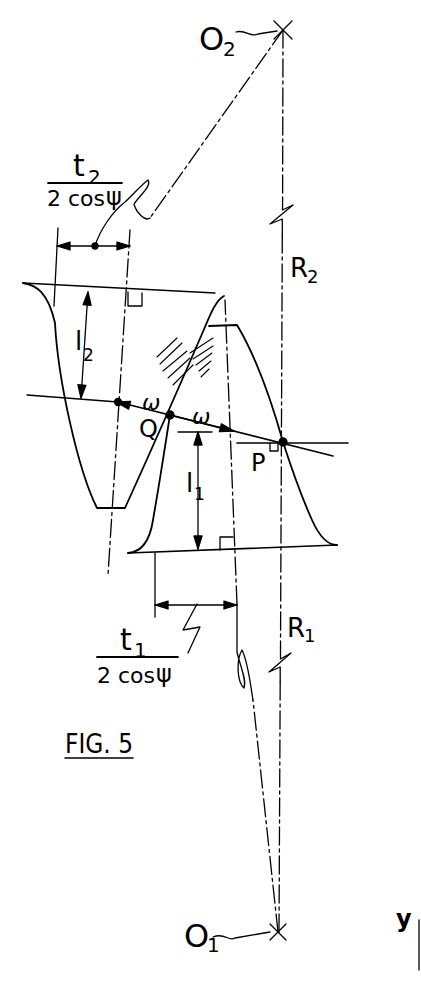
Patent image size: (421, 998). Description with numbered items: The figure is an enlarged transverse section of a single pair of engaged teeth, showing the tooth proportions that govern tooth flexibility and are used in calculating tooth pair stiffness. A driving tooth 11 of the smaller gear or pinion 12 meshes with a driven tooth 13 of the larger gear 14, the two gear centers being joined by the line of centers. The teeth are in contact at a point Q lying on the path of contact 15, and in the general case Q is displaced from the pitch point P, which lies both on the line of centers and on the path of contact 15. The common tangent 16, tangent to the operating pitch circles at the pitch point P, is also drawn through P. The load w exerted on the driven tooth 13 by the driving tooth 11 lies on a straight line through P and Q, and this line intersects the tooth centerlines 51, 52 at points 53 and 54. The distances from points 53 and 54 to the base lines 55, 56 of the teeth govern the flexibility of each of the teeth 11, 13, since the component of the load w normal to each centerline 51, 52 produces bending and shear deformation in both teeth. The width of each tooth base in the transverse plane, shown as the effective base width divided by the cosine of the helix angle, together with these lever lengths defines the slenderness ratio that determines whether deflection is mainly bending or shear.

The teeth of the pinion 11 is at (155, 520).
The pinion 12 is at (247, 616).
The teeth of the gear 13 is at (87, 488).
The gear 14 is at (216, 124).
The path of contact 15 is at (308, 447).
The common tangent 16 is at (310, 442).
The tooth centerline 51 is at (228, 372).
The tooth centerline 52 is at (110, 532).
The intersection point of load line with tooth centerline 53 is at (234, 430).
The intersection point of load line with tooth centerline 54 is at (118, 403).
The base line of the tooth 55 is at (292, 552).
The base line of the tooth 56 is at (134, 296).